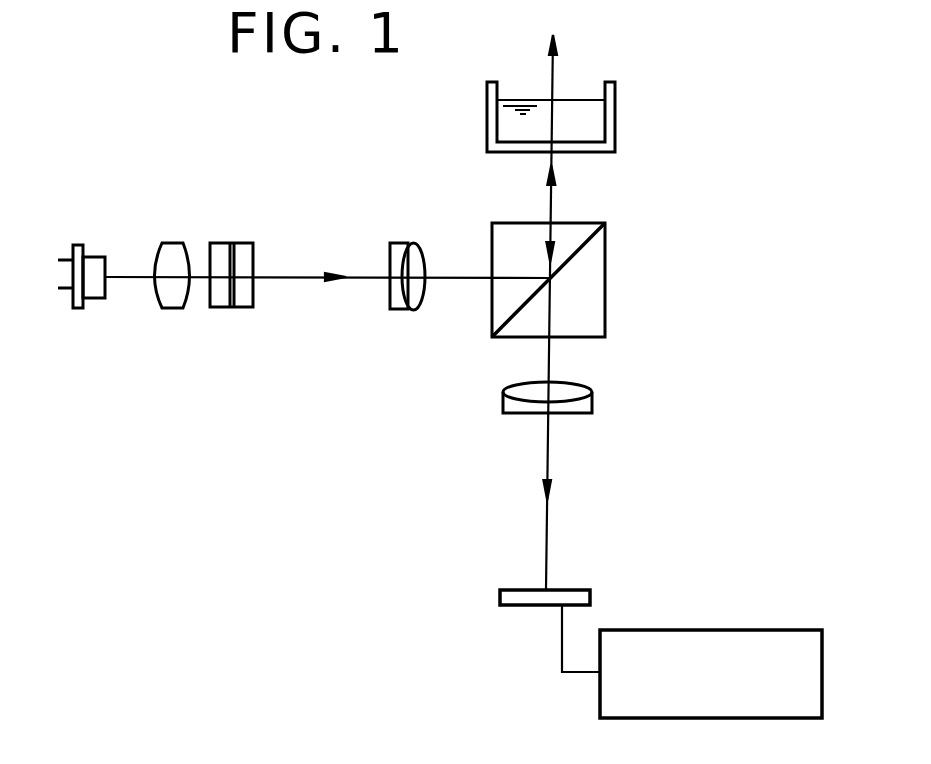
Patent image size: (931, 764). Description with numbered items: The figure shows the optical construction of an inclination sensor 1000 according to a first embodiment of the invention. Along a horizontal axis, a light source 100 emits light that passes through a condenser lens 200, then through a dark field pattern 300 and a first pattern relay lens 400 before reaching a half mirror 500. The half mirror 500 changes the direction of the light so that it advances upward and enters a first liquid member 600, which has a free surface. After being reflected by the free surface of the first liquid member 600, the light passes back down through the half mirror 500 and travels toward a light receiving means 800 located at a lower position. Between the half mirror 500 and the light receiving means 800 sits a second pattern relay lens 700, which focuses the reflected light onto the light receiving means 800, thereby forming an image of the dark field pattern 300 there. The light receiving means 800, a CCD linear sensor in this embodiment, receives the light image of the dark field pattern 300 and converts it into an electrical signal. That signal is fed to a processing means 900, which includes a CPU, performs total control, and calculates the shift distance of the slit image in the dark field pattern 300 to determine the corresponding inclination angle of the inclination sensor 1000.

The light source 100 is at (93, 257).
The condenser lens 200 is at (173, 242).
The dark field pattern 300 is at (242, 308).
The first pattern relay lens 400 is at (403, 243).
The half mirror 500 is at (605, 290).
The first liquid member 600 is at (615, 137).
The second pattern relay lens 700 is at (592, 402).
The light receiving means 800 is at (515, 590).
The processing means 900 is at (677, 630).
The inclination sensor 1000 is at (392, 390).